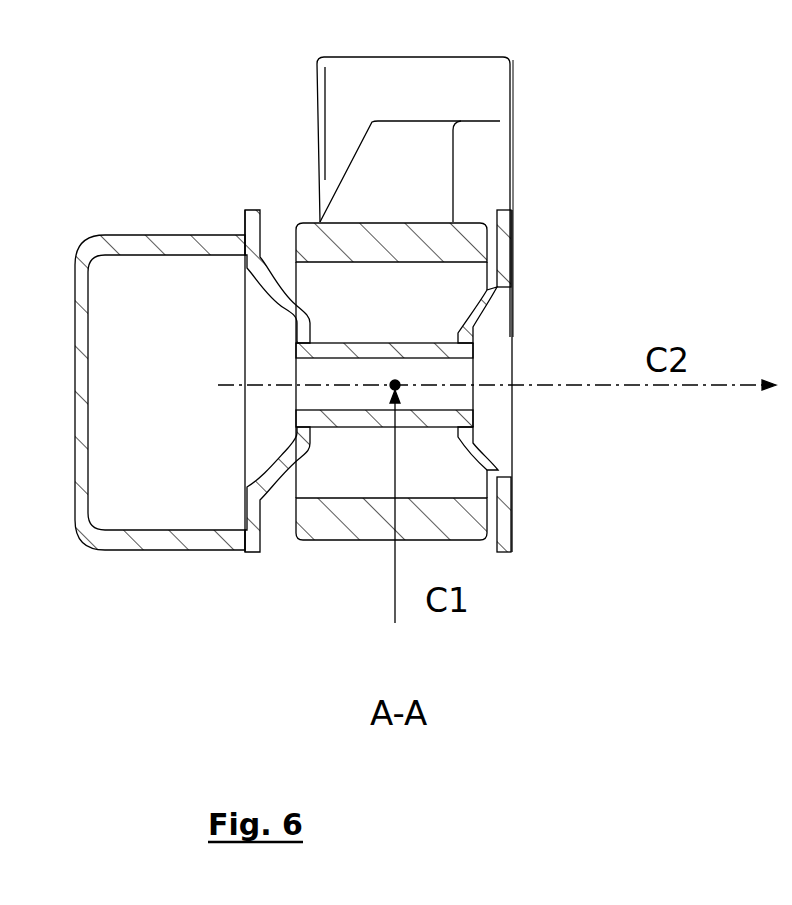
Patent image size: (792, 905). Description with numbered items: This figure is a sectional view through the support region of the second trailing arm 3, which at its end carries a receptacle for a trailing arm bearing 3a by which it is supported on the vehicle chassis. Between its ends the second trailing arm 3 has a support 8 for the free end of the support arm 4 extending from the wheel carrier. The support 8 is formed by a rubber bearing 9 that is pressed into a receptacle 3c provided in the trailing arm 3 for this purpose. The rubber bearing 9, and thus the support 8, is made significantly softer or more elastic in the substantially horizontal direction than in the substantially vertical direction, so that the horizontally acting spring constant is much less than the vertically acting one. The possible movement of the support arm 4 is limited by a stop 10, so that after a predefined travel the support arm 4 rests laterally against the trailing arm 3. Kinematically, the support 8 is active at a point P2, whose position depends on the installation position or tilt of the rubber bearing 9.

The support arm 4 is at (138, 236).
The stop 10 is at (272, 236).
The support 8 is at (291, 497).
The rubber bearing 9 is at (468, 277).
The receptacle 3c is at (458, 496).
The second trailing arm 3 is at (497, 530).
The trailing arm bearing 3a is at (487, 83).
The point P2 is at (395, 385).